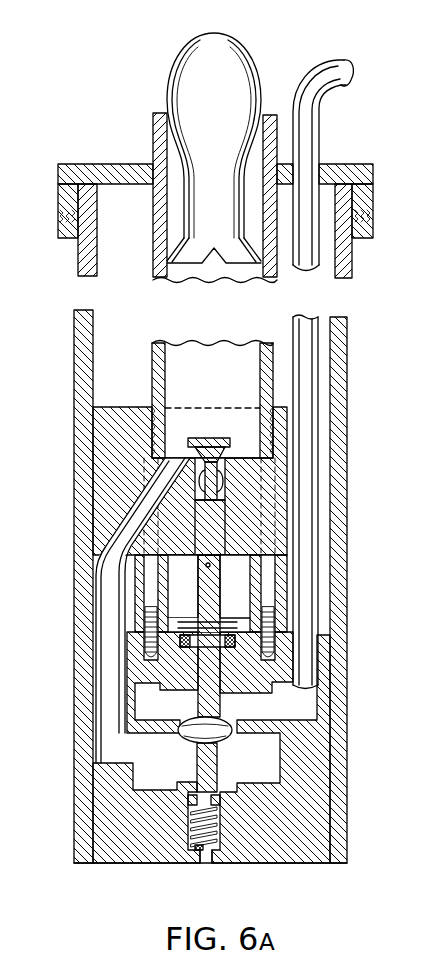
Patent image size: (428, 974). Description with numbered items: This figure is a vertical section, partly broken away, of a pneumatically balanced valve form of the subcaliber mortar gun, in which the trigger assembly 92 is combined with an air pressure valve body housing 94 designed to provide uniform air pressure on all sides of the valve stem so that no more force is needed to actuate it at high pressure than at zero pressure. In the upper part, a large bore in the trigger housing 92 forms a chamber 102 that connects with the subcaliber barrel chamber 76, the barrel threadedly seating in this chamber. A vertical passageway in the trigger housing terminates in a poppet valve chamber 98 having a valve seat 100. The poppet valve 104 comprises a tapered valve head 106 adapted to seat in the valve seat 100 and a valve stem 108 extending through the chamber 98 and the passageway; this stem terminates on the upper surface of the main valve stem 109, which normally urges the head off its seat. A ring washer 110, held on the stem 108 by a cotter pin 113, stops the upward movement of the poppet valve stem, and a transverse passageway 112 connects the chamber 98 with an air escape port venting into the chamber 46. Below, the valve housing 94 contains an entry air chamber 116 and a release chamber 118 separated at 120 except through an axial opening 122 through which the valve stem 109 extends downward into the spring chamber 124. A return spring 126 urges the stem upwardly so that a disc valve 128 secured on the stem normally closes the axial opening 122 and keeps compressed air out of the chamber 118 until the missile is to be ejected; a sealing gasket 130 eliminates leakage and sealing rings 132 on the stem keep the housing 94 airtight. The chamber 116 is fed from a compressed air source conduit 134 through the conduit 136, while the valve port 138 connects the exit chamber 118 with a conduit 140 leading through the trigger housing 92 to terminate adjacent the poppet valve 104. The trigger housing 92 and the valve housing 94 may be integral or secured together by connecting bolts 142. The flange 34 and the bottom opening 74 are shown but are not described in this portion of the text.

The mounting flange 34 is at (113, 163).
The compressed air source conduit 134 is at (328, 86).
The conduit 136 is at (307, 336).
The chamber 46 is at (137, 352).
The subcaliber barrel chamber 76 is at (208, 387).
The chamber 102 is at (175, 418).
The poppet valve 104 is at (234, 425).
The valve seat 100 is at (230, 440).
The tapered valve head 106 is at (197, 441).
The transverse passageway 112 is at (229, 470).
The trigger assembly 92 is at (112, 443).
The poppet valve chamber 98 is at (200, 508).
The conduit 140 is at (113, 583).
The ring washer 110 is at (199, 558).
The cotter pin 113 is at (206, 567).
The valve stem 108 is at (217, 541).
The sealing rings 132 is at (229, 636).
The connecting bolts 142 is at (274, 653).
The valve stem 109 is at (212, 707).
The entry air chamber 116 is at (170, 715).
The separation 120 is at (320, 729).
The axial opening 122 is at (234, 743).
The sealing gasket 130 is at (194, 739).
The disc valve 128 is at (222, 740).
The valve port 138 is at (120, 753).
The air pressure valve body housing 94 is at (353, 758).
The release chamber 118 is at (170, 777).
The return spring 126 is at (197, 849).
The outlet opening 74 is at (207, 859).
The spring chamber 124 is at (220, 828).